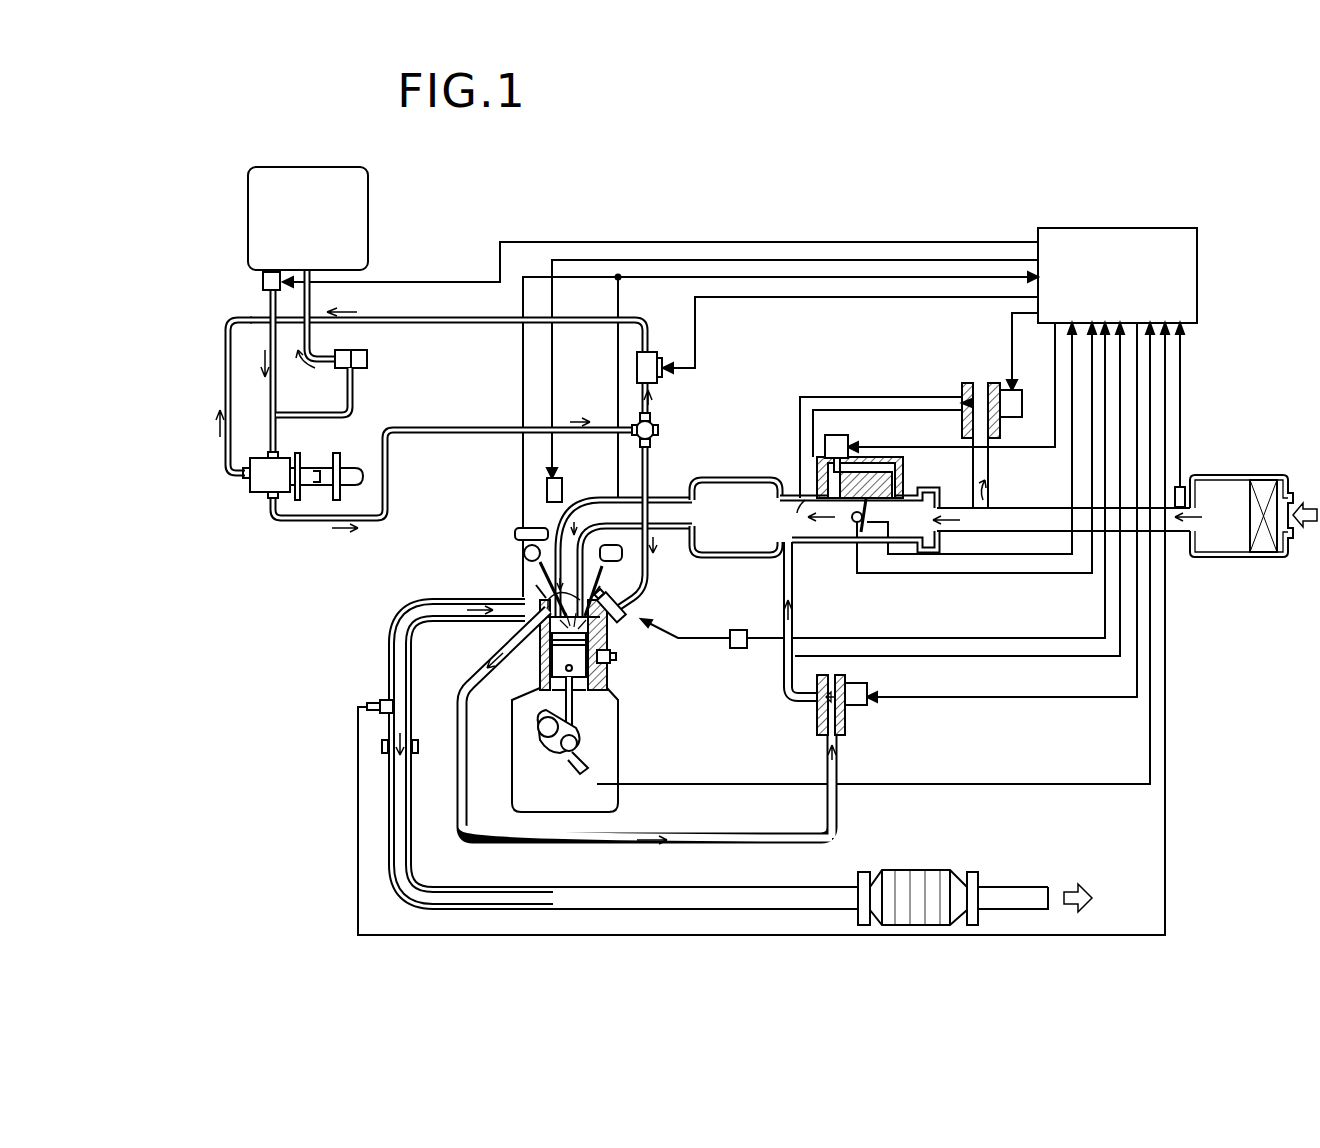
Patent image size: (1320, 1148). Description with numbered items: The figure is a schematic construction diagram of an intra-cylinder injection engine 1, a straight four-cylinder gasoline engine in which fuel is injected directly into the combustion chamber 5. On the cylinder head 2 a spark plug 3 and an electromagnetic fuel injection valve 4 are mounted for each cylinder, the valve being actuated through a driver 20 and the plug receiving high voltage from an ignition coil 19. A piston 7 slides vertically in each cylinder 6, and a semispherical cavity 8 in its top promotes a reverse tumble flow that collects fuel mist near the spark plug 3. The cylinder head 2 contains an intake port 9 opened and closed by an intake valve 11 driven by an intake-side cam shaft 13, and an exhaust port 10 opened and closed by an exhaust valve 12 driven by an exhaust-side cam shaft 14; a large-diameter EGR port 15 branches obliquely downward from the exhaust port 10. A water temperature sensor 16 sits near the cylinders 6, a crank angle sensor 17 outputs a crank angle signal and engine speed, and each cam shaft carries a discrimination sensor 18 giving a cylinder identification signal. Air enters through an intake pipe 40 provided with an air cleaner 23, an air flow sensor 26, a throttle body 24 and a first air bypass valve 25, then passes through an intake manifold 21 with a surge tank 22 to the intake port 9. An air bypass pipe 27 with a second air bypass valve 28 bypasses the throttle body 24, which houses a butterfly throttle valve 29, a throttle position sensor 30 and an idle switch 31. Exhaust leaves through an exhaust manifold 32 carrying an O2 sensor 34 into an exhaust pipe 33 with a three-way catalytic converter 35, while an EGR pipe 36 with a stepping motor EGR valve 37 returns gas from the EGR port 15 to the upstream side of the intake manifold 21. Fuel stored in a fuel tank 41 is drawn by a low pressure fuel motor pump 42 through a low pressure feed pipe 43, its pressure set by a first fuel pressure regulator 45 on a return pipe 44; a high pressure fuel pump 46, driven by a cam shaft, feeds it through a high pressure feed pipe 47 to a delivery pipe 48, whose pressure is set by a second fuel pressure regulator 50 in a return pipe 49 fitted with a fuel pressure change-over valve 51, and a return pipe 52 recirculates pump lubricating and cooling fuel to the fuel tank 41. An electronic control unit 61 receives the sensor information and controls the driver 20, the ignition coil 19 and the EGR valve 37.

The intra-cylinder injection engine 1 is at (650, 752).
The cylinder head 2 is at (520, 530).
The spark plug 3 is at (553, 612).
The fuel injection valve 4 is at (636, 628).
The combustion chamber 5 is at (552, 655).
The cylinder 6 is at (590, 690).
The piston 7 is at (562, 690).
The cavity 8 is at (607, 672).
The intake port 9 is at (566, 520).
The exhaust port 10 is at (525, 610).
The intake valve 11 is at (618, 588).
The exhaust valve 12 is at (540, 590).
The intake-side cam shaft 13 is at (620, 563).
The exhaust-side cam shaft 14 is at (362, 455).
The EGR port 15 is at (528, 618).
The water temperature sensor 16 is at (616, 658).
The crank angle sensor 17 is at (570, 763).
The discrimination sensor 18 is at (528, 545).
The ignition coil 19 is at (547, 485).
The driver 20 is at (738, 630).
The intake manifold 21 is at (662, 498).
The surge tank 22 is at (740, 480).
The air cleaner 23 is at (1262, 478).
The throttle body 24 is at (855, 523).
The first air bypass valve 25 is at (848, 442).
The air flow sensor 26 is at (1185, 487).
The air bypass pipe 27 is at (890, 397).
The second air bypass valve 28 is at (977, 378).
The throttle valve 29 is at (852, 521).
The throttle position sensor 30 is at (870, 503).
The idle switch 31 is at (866, 524).
The exhaust manifold 32 is at (388, 640).
The exhaust pipe 33 is at (1008, 893).
The O2 sensor 34 is at (372, 702).
The three-way catalytic converter 35 is at (913, 870).
The EGR pipe 36 is at (720, 833).
The EGR valve 37 is at (850, 720).
The intake pipe 40 is at (1028, 506).
The fuel tank 41 is at (368, 222).
The low pressure fuel motor pump 42 is at (263, 282).
The low pressure feed pipe 43 is at (278, 438).
The return pipe 44 is at (353, 388).
The first fuel pressure regulator 45 is at (368, 356).
The high pressure fuel pump 46 is at (258, 493).
The high pressure feed pipe 47 is at (306, 522).
The delivery pipe 48 is at (658, 428).
The return pipe 49 is at (484, 326).
The second fuel pressure regulator 50 is at (648, 360).
The fuel pressure change-over valve 51 is at (660, 375).
The return pipe 52 is at (226, 380).
The electronic control unit 61 is at (1197, 267).